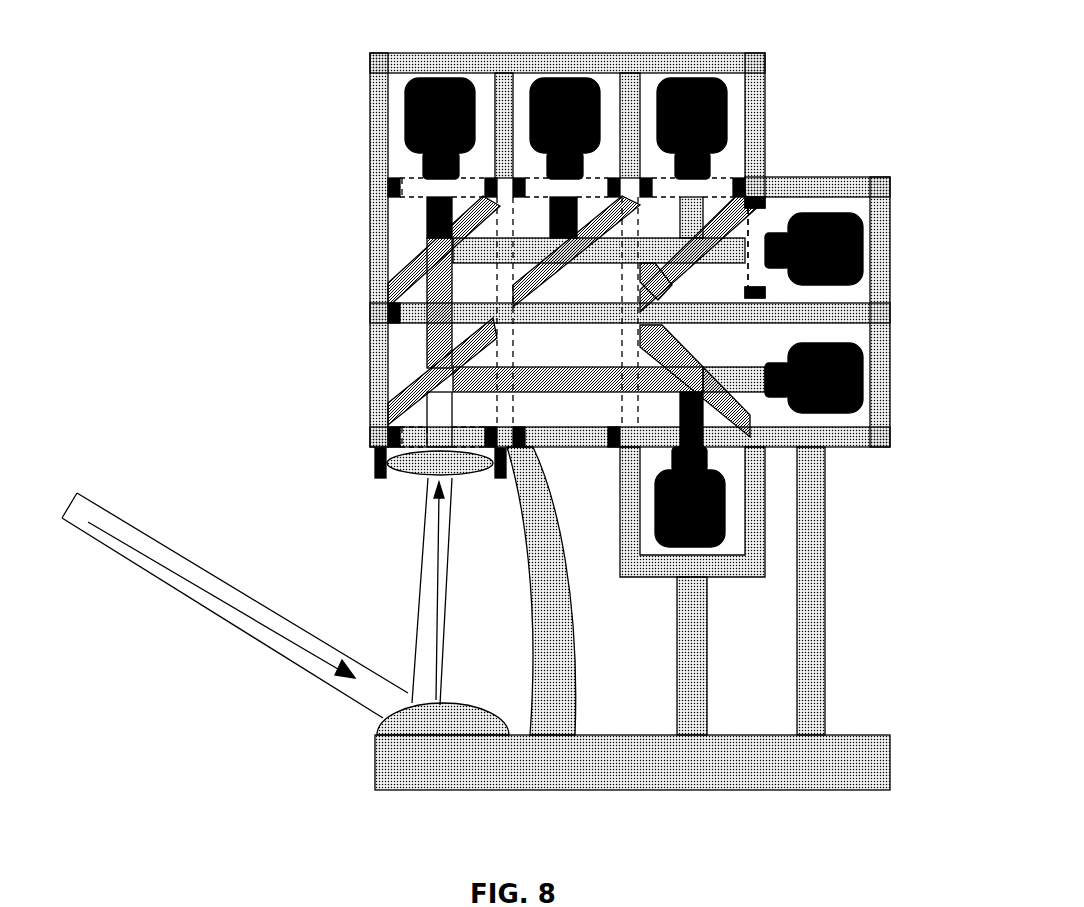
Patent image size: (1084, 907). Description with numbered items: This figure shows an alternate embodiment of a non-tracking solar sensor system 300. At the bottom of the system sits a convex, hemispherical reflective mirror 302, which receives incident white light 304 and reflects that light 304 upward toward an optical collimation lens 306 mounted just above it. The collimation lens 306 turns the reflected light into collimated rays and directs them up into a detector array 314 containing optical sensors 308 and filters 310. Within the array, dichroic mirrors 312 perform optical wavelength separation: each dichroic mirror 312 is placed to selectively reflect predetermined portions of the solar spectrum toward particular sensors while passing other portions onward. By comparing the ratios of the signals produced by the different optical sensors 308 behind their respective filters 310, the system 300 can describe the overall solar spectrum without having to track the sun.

The non-tracking solar sensor system 300 is at (278, 214).
The convex reflective mirror 302 is at (380, 733).
The incident white light 304 is at (147, 570).
The optical collimation lens 306 is at (408, 471).
The optical sensor 308 is at (421, 163).
The filter 310 is at (758, 218).
The dichroic mirror 312 is at (413, 387).
The array of optical sensors and filters 314 is at (767, 93).